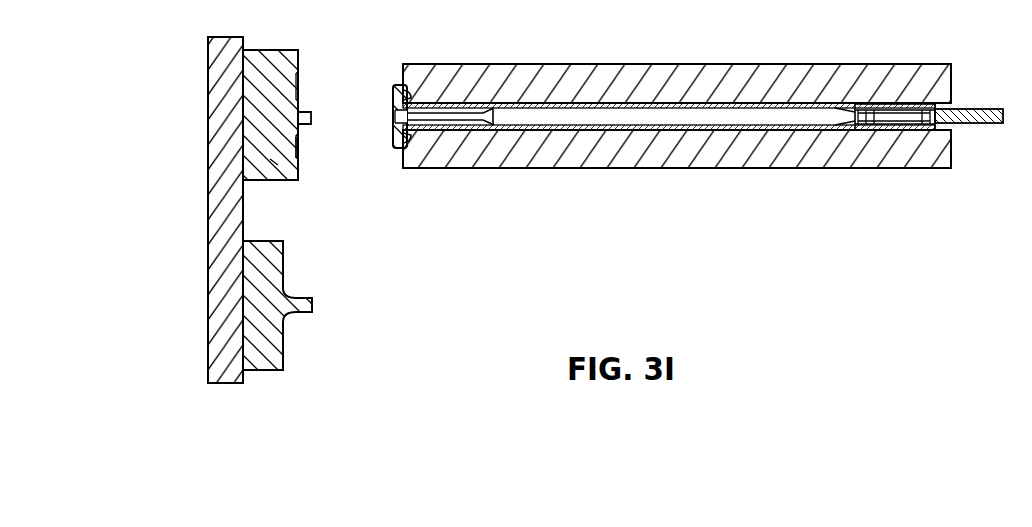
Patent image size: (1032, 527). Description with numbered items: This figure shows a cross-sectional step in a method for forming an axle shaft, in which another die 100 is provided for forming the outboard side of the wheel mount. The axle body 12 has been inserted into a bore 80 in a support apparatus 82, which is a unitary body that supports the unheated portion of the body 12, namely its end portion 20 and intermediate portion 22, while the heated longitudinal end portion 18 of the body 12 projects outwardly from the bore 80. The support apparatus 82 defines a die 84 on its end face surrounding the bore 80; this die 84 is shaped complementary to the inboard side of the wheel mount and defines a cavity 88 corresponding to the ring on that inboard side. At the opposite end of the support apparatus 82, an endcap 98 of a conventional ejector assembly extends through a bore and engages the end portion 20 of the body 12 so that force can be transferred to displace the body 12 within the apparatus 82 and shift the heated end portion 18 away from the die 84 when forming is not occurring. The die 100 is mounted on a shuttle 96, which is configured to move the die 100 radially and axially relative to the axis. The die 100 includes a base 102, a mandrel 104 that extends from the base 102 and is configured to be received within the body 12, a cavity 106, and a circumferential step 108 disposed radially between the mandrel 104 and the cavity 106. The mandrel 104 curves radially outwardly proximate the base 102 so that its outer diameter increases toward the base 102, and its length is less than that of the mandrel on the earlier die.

The body 12 is at (693, 115).
The longitudinal end portion 18 is at (472, 105).
The end portion 20 is at (890, 135).
The intermediate portion 22 is at (628, 130).
The bore 80 is at (768, 130).
The support apparatus 82 is at (885, 80).
The die 84 is at (397, 90).
The cavity 88 is at (405, 97).
The shuttle 96 is at (218, 300).
The endcap 98 is at (980, 109).
The die 100 is at (298, 83).
The base 102 is at (302, 120).
The mandrel 104 is at (276, 164).
The cavity 106 is at (300, 148).
The circumferential step 108 is at (300, 125).